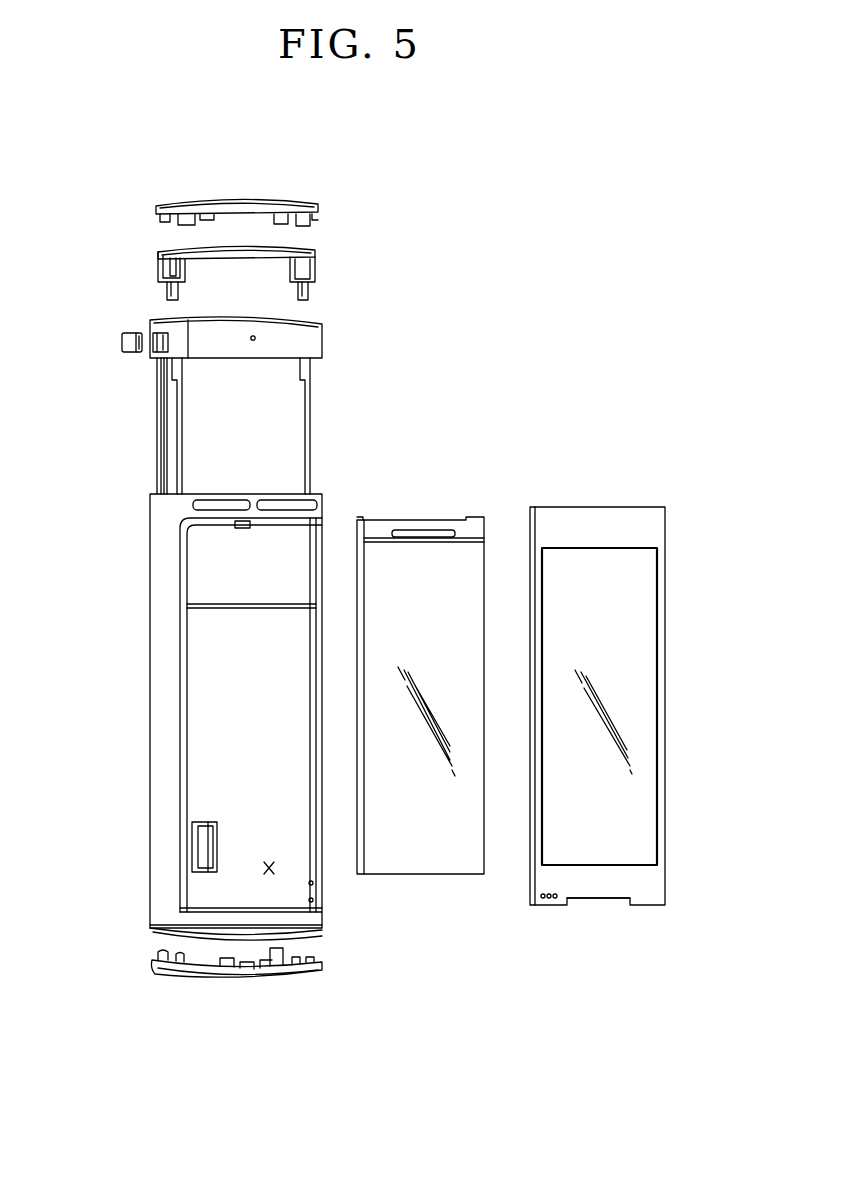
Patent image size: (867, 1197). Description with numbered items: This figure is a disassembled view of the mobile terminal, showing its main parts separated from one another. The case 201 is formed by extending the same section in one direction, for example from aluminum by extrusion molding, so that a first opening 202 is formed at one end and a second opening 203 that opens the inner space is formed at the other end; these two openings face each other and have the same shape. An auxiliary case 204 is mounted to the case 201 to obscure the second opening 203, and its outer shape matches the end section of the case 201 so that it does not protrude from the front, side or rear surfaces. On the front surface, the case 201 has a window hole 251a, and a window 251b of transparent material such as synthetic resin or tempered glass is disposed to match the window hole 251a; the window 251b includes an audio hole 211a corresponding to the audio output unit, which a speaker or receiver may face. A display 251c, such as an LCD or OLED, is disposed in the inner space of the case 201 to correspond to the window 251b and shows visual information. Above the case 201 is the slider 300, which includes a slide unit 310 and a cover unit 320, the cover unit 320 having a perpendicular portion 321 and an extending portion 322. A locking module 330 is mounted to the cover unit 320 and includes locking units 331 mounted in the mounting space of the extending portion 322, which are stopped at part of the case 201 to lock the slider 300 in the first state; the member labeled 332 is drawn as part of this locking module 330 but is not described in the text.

The case 201 is at (162, 712).
The first opening 202 is at (195, 480).
The second opening 203 is at (165, 940).
The auxiliary case 204 is at (197, 975).
The audio hole 211a is at (590, 900).
The window hole 251a is at (278, 868).
The window 251b is at (630, 823).
The display 251c is at (440, 845).
The slider 300 is at (150, 398).
The slide unit 310 is at (190, 430).
The cover unit 320 is at (415, 312).
The perpendicular portion 321 is at (320, 358).
The extending portion 322 is at (318, 326).
The locking module 330 is at (150, 250).
The locking units 331 is at (170, 290).
The top frame 332 is at (185, 266).